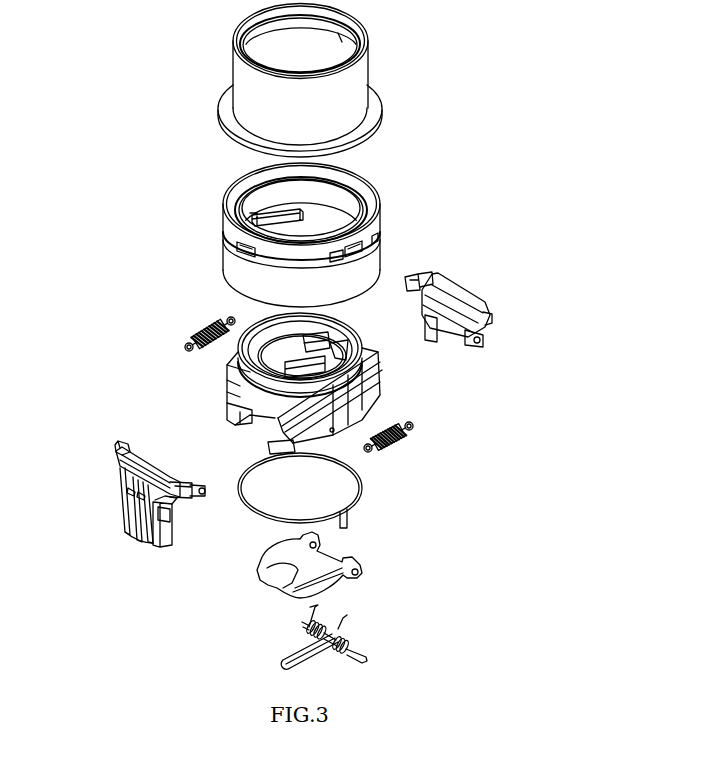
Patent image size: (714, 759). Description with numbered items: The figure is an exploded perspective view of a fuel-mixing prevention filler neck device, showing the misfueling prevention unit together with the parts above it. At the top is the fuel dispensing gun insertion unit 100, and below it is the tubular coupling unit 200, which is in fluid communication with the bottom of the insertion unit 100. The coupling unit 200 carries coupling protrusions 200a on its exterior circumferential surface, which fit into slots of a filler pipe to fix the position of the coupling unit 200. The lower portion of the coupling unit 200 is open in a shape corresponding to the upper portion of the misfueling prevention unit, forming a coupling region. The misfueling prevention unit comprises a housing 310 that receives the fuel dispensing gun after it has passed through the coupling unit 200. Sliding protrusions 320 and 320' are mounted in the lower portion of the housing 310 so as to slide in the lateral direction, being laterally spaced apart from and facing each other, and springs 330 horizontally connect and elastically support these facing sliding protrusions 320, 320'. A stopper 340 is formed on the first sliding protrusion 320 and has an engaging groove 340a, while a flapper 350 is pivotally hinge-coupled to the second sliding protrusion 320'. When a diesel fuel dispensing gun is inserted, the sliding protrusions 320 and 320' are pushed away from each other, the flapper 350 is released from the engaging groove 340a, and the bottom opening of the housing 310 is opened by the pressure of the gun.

The fuel dispensing gun insertion unit 100 is at (374, 64).
The coupling unit 200 is at (386, 210).
The coupling protrusions 200a is at (225, 237).
The housing 310 is at (227, 376).
The first sliding protrusion 320 is at (114, 492).
The second sliding protrusion 320' is at (489, 300).
The springs 330 is at (397, 433).
The stopper 340 is at (166, 545).
The engaging groove 340a is at (175, 505).
The flapper 350 is at (367, 571).